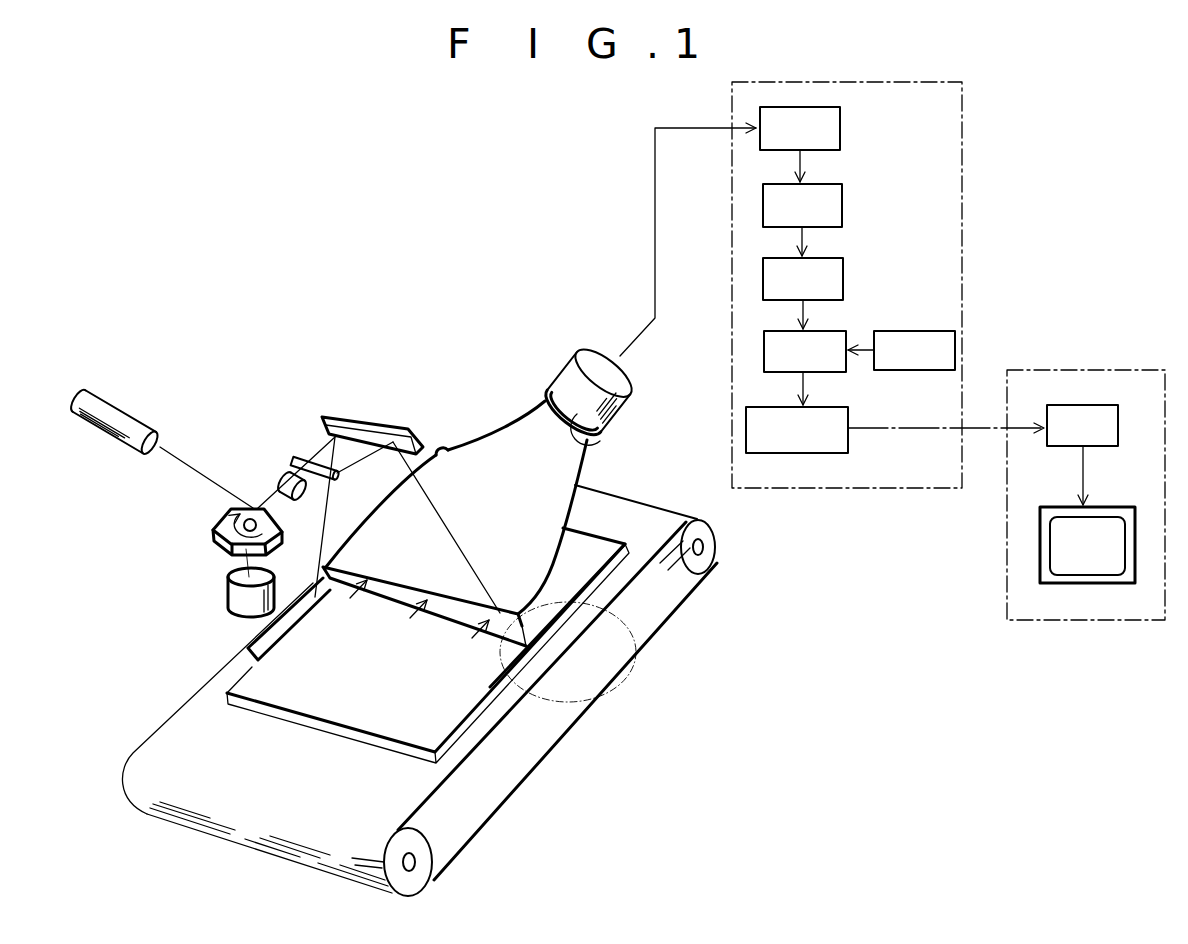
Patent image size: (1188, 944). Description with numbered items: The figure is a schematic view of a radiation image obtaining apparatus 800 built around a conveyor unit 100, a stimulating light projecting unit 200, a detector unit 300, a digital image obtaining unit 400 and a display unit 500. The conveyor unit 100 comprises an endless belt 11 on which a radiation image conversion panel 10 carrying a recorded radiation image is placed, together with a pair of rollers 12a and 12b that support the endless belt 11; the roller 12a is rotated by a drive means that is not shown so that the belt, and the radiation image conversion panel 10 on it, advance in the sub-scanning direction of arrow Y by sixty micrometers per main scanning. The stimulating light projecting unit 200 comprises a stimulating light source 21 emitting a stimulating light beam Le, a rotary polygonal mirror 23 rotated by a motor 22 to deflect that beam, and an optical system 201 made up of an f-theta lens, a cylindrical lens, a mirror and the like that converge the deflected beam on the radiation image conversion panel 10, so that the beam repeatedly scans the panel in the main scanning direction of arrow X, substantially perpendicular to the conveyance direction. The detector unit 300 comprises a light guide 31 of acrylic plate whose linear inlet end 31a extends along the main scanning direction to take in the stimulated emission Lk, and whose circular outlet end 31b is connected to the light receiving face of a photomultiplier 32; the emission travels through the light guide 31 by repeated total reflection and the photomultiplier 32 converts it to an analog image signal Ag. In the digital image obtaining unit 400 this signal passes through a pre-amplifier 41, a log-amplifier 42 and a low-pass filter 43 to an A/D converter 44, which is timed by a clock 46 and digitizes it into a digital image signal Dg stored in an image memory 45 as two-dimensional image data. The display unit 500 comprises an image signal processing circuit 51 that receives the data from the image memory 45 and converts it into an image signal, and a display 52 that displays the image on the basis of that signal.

The conveyor unit 100 is at (466, 690).
The radiation image conversion panel 10 is at (500, 725).
The endless belt 11 is at (420, 797).
The roller 12a is at (432, 877).
The roller 12b is at (712, 558).
The stimulating light projecting unit 200 is at (245, 446).
The stimulating light source 21 is at (142, 412).
The motor 22 is at (228, 596).
The rotary polygonal mirror 23 is at (218, 522).
The optical system 201 is at (337, 387).
The detector unit 300 is at (493, 493).
The light guide 31 is at (497, 458).
The inlet end 31a is at (528, 655).
The outlet end 31b is at (583, 444).
The photomultiplier 32 is at (572, 357).
The digital image obtaining unit 400 is at (888, 285).
The pre-amplifier 41 is at (843, 118).
The log-amplifier 42 is at (845, 194).
The low-pass filter 43 is at (845, 268).
The A/D converter 44 is at (836, 331).
The image memory 45 is at (830, 454).
The clock 46 is at (928, 331).
The display unit 500 is at (1006, 469).
The image signal processing circuit 51 is at (1093, 406).
The display 52 is at (1112, 507).
The radiation image obtaining apparatus 800 is at (407, 133).